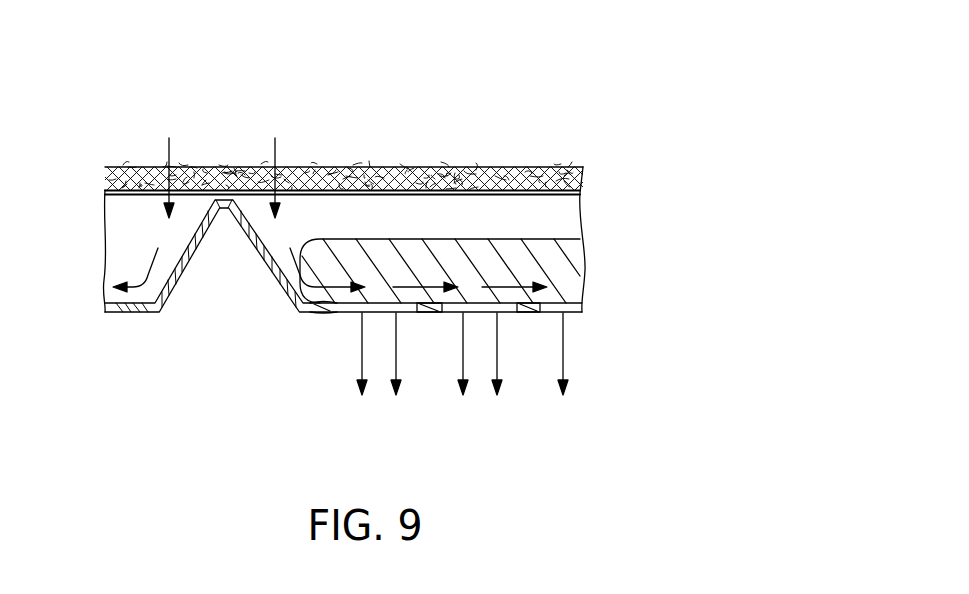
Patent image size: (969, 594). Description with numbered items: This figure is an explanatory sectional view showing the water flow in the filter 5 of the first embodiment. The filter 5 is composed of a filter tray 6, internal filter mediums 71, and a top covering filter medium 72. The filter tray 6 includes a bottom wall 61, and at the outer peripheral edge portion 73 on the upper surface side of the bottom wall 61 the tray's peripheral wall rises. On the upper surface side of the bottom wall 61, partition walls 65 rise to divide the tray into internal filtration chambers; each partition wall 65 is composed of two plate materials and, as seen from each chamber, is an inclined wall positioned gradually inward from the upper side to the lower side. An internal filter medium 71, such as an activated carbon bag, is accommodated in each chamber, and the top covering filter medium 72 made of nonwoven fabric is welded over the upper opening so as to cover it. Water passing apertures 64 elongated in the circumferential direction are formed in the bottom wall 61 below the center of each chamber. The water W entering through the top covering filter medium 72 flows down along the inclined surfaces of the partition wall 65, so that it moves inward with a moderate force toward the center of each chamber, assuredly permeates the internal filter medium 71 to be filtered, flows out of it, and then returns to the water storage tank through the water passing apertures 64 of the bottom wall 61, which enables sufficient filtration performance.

The filter 5 is at (562, 123).
The filter tray 6 is at (128, 310).
The bottom wall 61 is at (327, 313).
The water passing aperture 64 is at (450, 313).
The partition wall 65 is at (180, 281).
The internal filter medium 71 is at (500, 263).
The top covering filter medium 72 is at (352, 165).
The outer peripheral edge portion 73 is at (583, 177).
The water W is at (168, 157).